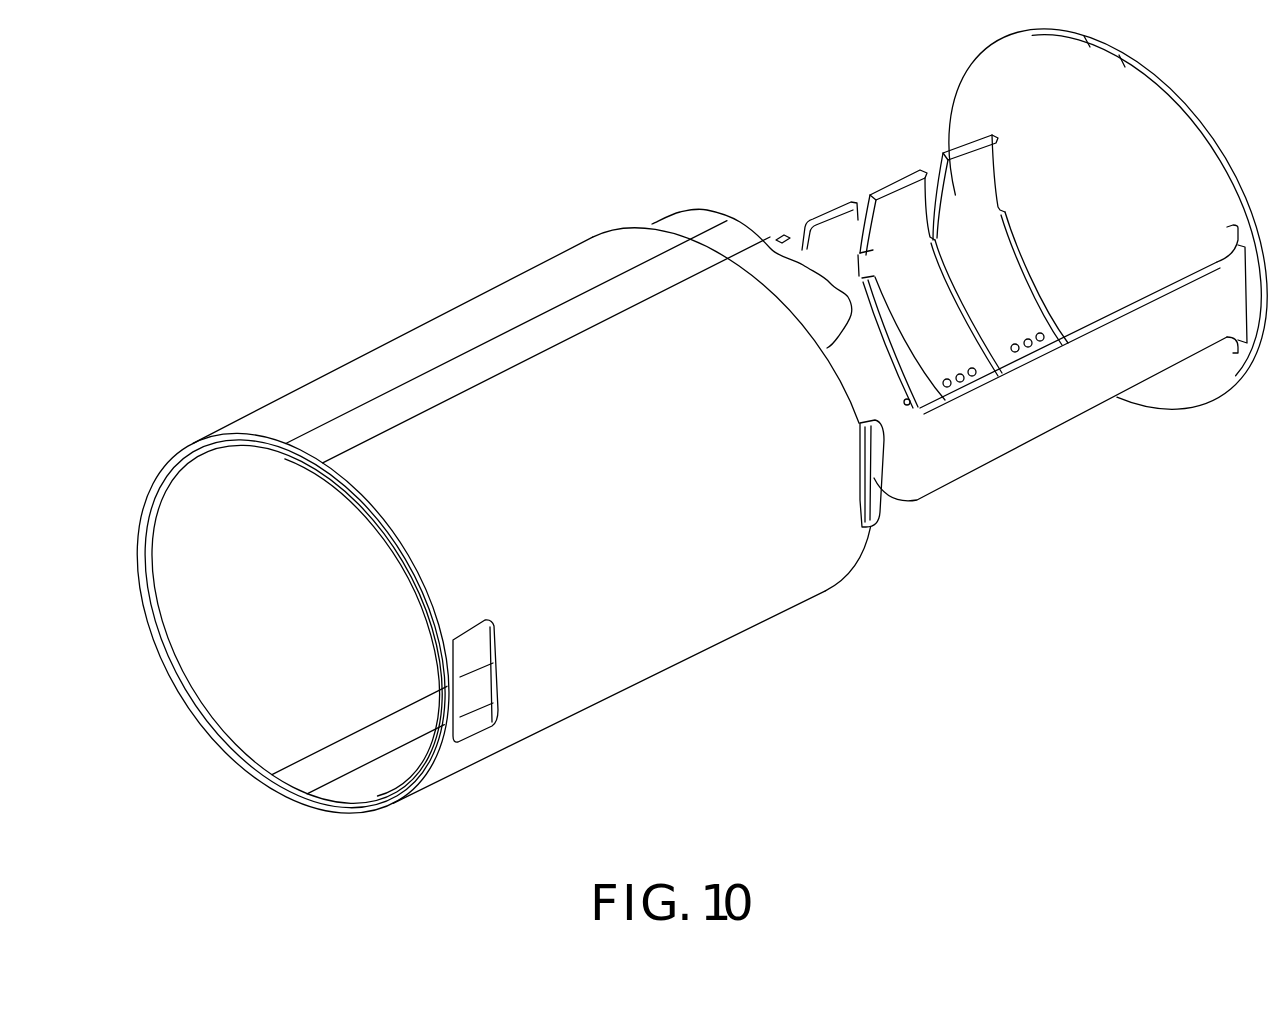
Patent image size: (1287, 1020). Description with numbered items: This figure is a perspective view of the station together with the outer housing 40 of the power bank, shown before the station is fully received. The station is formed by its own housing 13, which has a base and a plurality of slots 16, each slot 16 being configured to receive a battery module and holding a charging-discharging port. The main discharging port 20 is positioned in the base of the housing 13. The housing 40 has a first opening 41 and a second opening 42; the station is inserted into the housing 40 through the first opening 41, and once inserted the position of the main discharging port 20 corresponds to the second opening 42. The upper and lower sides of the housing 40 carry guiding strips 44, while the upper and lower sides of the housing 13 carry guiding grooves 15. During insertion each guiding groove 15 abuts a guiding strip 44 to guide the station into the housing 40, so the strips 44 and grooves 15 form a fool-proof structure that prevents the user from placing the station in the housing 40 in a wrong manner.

The housing 13 is at (782, 273).
The guiding groove 15 is at (737, 245).
The slot 16 is at (907, 277).
The main discharging port 20 is at (878, 490).
The housing 40 is at (697, 636).
The first opening 41 is at (850, 225).
The second opening 42 is at (475, 647).
The guiding strip 44 is at (283, 467).